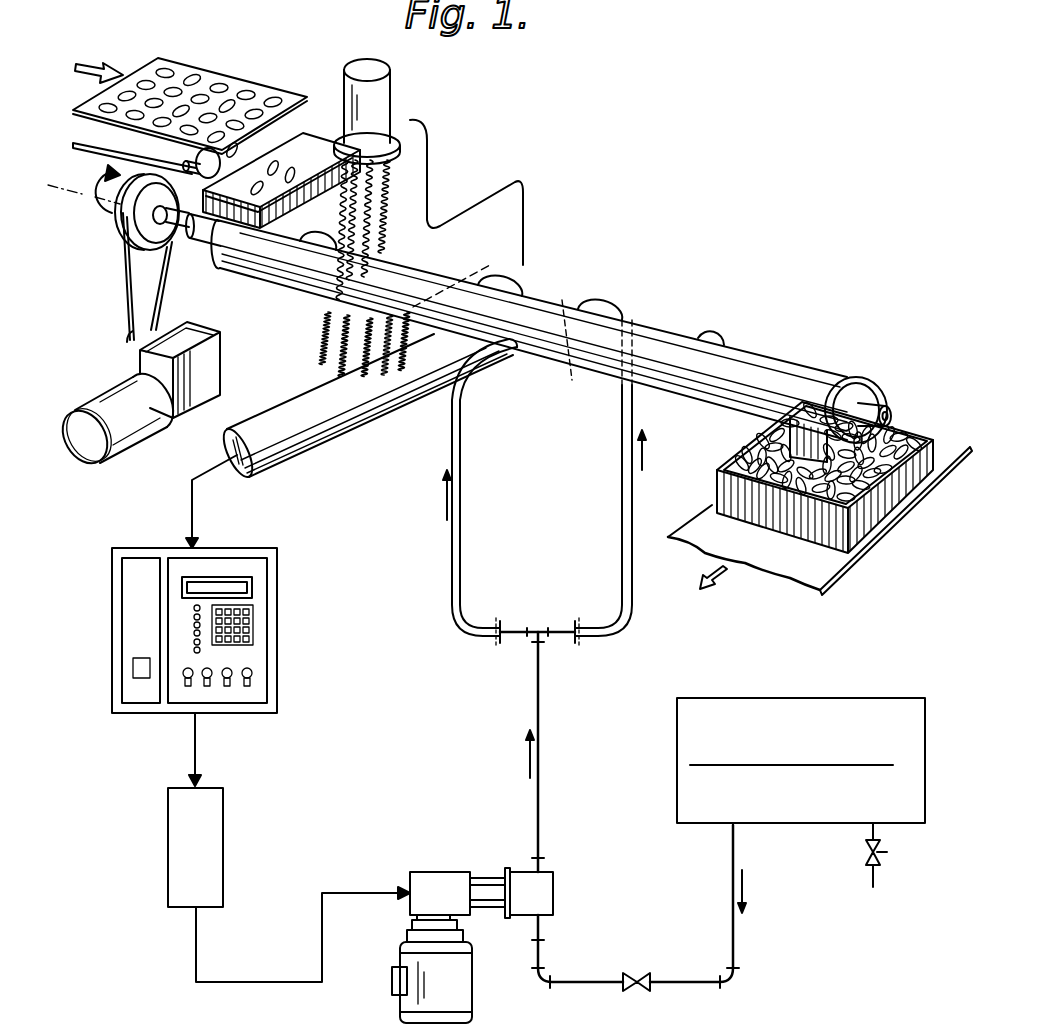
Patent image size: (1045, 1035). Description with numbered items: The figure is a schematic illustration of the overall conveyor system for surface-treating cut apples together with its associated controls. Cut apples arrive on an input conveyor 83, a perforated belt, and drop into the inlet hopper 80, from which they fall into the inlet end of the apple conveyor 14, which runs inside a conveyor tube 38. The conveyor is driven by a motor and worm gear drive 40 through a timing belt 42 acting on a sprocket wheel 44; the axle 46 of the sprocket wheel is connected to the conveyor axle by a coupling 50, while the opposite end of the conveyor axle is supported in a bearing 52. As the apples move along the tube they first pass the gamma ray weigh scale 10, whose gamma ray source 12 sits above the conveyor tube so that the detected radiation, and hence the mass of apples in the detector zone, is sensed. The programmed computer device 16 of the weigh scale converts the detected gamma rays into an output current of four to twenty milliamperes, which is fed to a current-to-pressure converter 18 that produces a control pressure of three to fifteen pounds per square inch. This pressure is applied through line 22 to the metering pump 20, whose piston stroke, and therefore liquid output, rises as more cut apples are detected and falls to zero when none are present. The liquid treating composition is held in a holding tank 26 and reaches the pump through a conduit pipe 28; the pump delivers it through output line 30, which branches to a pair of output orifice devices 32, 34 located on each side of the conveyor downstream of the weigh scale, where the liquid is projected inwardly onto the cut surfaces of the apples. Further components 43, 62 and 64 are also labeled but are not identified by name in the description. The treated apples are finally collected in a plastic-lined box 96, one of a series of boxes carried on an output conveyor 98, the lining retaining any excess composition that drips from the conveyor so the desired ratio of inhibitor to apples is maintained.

The gamma ray weigh scale 10 is at (470, 203).
The gamma ray source 12 is at (383, 107).
The apple conveyor 14 is at (700, 330).
The programmed computer device 16 is at (280, 635).
The current-to-pressure converter 18 is at (225, 862).
The metering pump 20 is at (540, 898).
The line 22 is at (290, 983).
The holding tank 26 is at (797, 705).
The conduit pipe 28 is at (733, 938).
The output line 30 is at (538, 693).
The output orifice device 32 is at (517, 352).
The output orifice device 34 is at (571, 370).
The conveyor tube 38 is at (543, 293).
The motor and worm gear drive 40 is at (121, 447).
The timing belt 42 is at (132, 293).
The feed roller 43 is at (320, 433).
The sprocket wheel 44 is at (130, 232).
The axle 46 is at (178, 230).
The coupling 50 is at (212, 248).
The bearing 52 is at (860, 377).
The return conduit 62 is at (452, 545).
The feed conduit 64 is at (622, 468).
The inlet hopper 80 is at (322, 133).
The input conveyor 83 is at (203, 72).
The plastic-lined box 96 is at (913, 433).
The output conveyor 98 is at (840, 568).